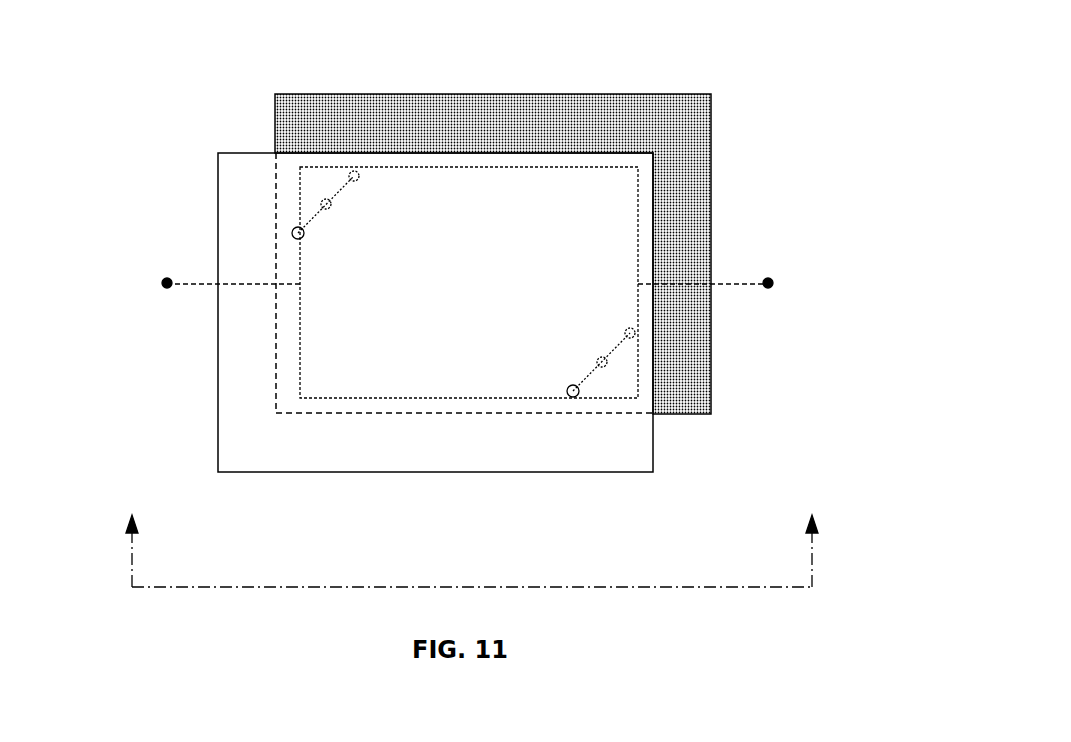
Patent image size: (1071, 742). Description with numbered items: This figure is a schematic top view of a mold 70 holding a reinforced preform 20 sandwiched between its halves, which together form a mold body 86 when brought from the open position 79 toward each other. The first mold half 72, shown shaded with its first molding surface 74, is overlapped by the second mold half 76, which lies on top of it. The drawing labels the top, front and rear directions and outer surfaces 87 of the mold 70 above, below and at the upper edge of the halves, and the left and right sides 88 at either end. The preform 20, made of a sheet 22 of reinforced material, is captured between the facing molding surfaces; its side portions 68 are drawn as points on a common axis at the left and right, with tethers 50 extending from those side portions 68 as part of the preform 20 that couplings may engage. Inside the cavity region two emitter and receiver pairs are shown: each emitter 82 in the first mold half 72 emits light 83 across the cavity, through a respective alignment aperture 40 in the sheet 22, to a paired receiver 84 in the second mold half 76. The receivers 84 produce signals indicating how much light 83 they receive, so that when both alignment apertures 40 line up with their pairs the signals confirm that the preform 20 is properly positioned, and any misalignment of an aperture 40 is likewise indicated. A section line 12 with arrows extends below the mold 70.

The section line 12- 12 is at (473, 536).
The reinforced preform 20 is at (580, 282).
The sheet of reinforced material 22 is at (638, 224).
The alignment apertures 40 is at (332, 208).
The tethers 50 is at (202, 284).
The side portions 68 is at (162, 283).
The mold 70 is at (872, 77).
The first mold half 72 is at (429, 237).
The first molding surface 74 is at (282, 120).
The second mold half 76 is at (232, 208).
The open position 79 is at (818, 108).
The emitter 82 is at (362, 178).
The light 83 is at (338, 190).
The sensor/receiver 84 is at (303, 238).
The mold body 86 is at (834, 149).
The directions, locations and orientations 87 is at (365, 286).
The sides 88 is at (85, 377).